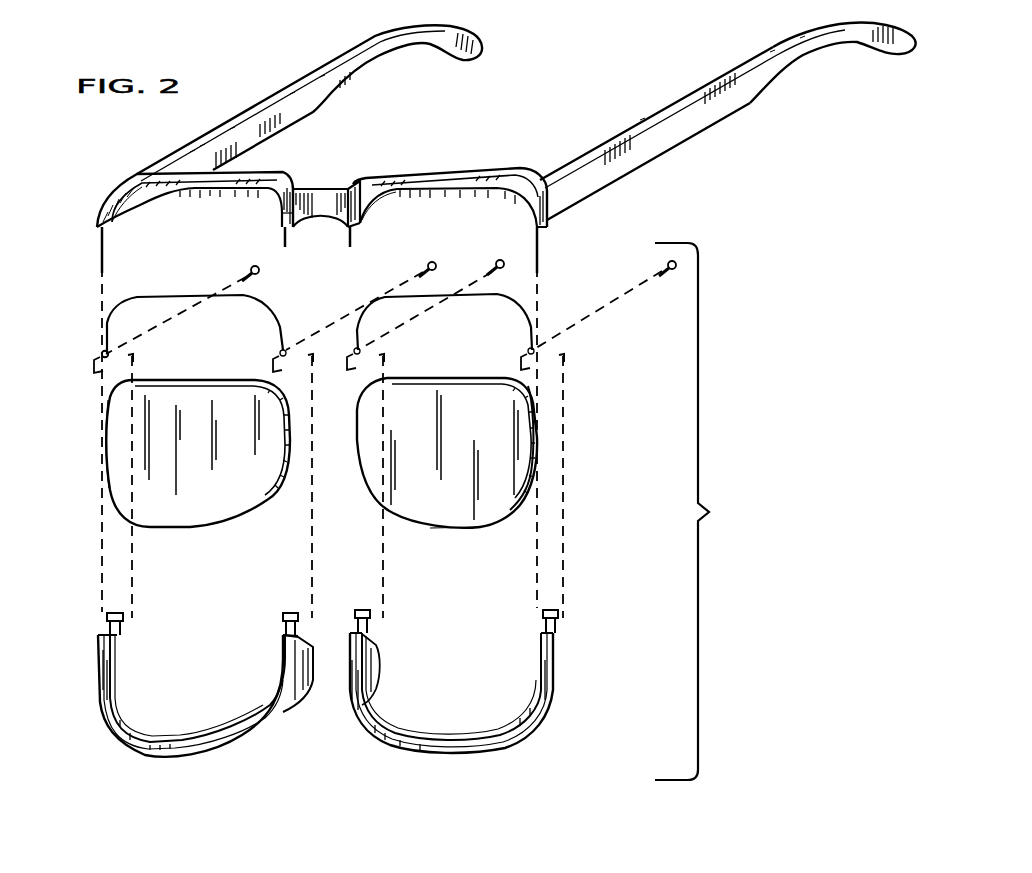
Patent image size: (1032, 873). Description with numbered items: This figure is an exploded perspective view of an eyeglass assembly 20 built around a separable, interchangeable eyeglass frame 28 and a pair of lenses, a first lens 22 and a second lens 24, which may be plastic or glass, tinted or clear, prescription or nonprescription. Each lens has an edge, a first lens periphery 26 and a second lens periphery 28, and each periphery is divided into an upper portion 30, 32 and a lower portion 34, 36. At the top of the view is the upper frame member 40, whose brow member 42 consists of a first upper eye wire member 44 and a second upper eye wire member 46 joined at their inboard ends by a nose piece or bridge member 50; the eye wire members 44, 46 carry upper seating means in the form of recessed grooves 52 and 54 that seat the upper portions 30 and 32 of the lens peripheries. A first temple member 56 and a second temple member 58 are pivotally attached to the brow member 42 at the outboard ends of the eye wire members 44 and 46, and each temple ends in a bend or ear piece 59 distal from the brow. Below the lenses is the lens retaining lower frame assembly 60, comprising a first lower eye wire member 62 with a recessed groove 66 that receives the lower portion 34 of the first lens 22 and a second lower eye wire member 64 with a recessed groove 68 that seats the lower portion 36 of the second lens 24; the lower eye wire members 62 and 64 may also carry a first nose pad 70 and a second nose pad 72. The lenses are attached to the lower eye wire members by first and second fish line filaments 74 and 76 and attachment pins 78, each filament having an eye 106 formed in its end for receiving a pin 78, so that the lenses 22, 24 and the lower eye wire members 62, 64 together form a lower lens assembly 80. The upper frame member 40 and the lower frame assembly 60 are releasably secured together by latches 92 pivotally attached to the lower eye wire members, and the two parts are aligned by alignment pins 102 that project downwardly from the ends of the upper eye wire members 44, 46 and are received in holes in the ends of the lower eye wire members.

The eyeglass assembly 20 is at (101, 532).
The first lens 22 is at (135, 465).
The second lens 24 is at (500, 418).
The first lens periphery 26 is at (108, 423).
The eyeglass frame 28 is at (133, 162).
The upper portion of first lens periphery 30 is at (215, 380).
The upper portion of second lens periphery 32 is at (447, 378).
The lower portion of first lens periphery 34 is at (187, 530).
The lower portion of second lens periphery 36 is at (458, 530).
The upper frame member 40 is at (91, 209).
The brow member 42 is at (292, 188).
The first upper eye wire member 44 is at (200, 188).
The second upper eye wire member 46 is at (455, 176).
The bridge member 50 is at (322, 204).
The recessed groove 52 is at (118, 206).
The recessed groove 54 is at (372, 203).
The first temple member 56 is at (253, 128).
The second temple member 58 is at (683, 127).
The ear piece 59 is at (783, 49).
The lower frame assembly 60 is at (115, 757).
The first lower eye wire member 62 is at (201, 756).
The second lower eye wire member 64 is at (455, 752).
The recessed groove 66 is at (151, 735).
The recessed groove 68 is at (426, 727).
The first nose pad 70 is at (303, 692).
The second nose pad 72 is at (376, 672).
The first fish line filament 74 is at (243, 297).
The second fish line filament 76 is at (485, 295).
The attachment pin 78 is at (258, 274).
The lower lens assembly 80 is at (712, 512).
The latch 92 is at (122, 632).
The alignment pin 102 is at (104, 232).
The eye 106 is at (103, 352).